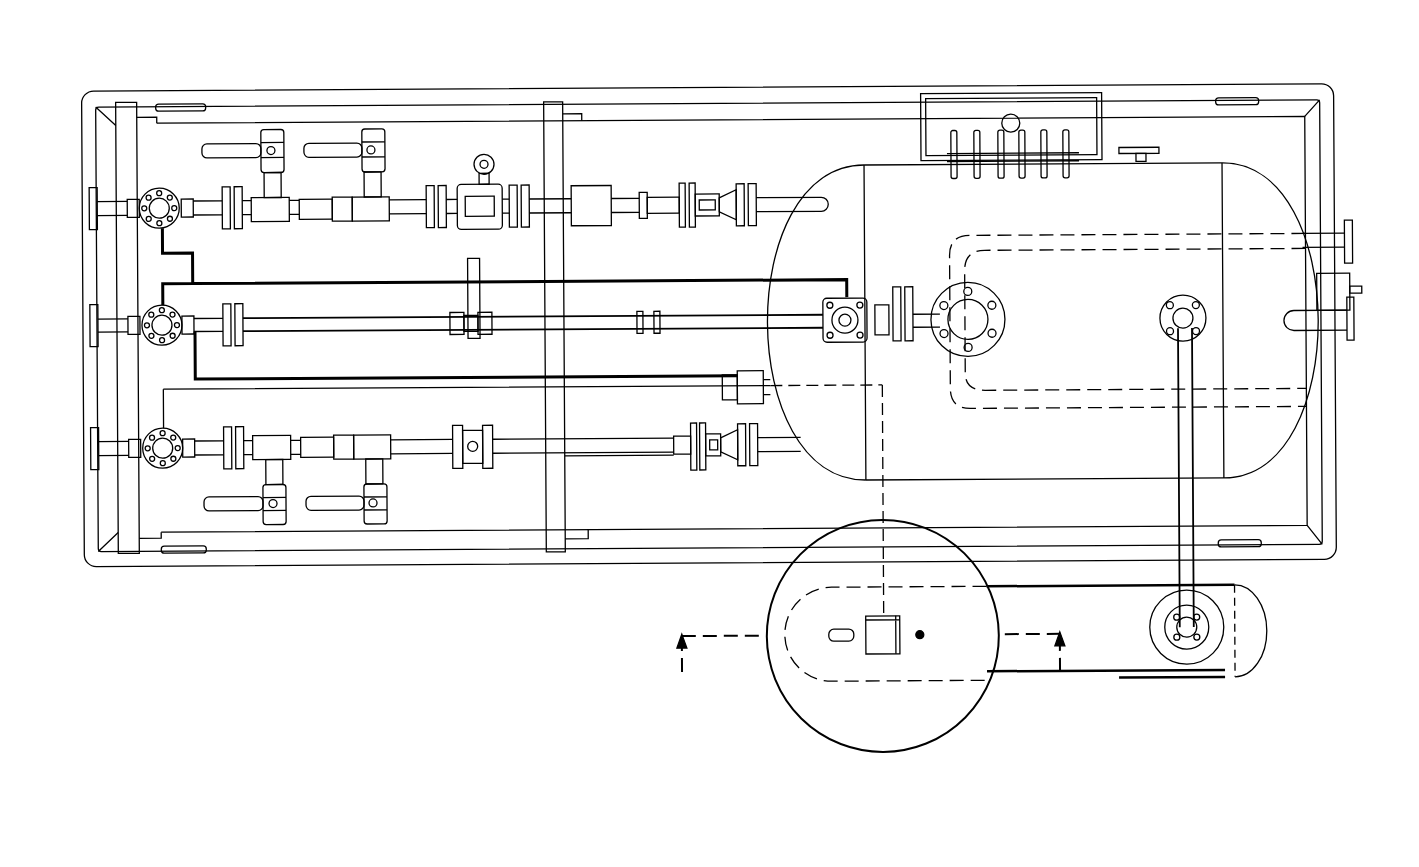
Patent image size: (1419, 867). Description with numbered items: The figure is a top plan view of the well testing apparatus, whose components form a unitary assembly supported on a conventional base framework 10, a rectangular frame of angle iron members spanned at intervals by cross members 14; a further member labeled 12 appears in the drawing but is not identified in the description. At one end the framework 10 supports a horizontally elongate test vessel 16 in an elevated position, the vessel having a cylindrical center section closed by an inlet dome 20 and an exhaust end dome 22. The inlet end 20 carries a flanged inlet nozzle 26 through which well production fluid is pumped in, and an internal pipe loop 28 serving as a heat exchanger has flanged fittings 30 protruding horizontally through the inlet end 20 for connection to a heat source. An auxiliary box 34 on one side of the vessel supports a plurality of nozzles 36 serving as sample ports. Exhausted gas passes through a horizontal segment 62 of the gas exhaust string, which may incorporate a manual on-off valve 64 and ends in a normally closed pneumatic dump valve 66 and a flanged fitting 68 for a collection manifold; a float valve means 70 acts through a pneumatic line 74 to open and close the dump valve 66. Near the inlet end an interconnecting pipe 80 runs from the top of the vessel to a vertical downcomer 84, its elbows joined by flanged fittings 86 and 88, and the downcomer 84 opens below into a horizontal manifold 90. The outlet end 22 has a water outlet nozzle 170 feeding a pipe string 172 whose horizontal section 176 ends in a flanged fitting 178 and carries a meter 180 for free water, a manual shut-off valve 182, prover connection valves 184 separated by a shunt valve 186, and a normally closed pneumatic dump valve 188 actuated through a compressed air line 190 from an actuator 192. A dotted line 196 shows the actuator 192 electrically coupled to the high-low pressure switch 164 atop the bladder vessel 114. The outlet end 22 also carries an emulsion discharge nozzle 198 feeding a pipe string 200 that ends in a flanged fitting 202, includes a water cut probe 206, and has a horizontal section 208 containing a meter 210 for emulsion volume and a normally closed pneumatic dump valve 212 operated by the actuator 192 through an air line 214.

The base framework 10 is at (637, 86).
The frame housing 12 is at (1337, 118).
The cross members 14 is at (553, 127).
The test vessel 16 is at (1176, 158).
The inlet dome 20 is at (1272, 458).
The exhaust end dome 22 is at (818, 180).
The flanged inlet nozzle 26 is at (1356, 320).
The internal pipe loop 28 is at (1240, 392).
The flanged fittings 30 is at (1356, 235).
The auxiliary box 34 is at (930, 140).
The nozzles 36 is at (1085, 135).
The horizontal segment of gas exhaust pipe string 62 is at (322, 330).
The manual on-off valve 64 is at (468, 299).
The dump valve 66 is at (162, 343).
The flanged fitting 68 is at (84, 330).
The float valve means 70 is at (917, 300).
The pneumatic line 74 is at (700, 278).
The interconnecting pipe 80 is at (1195, 508).
The downcomer 84 is at (1258, 650).
The flanged fitting 86 is at (1178, 305).
The flanged fitting 88 is at (1230, 614).
The manifold 90 is at (1118, 680).
The bladder vessel 114 is at (786, 705).
The high-low pressure switch 164 is at (880, 657).
The water outlet nozzle 170 is at (772, 453).
The pipe string 172 is at (413, 456).
The horizontal section of pipe string 176 is at (582, 456).
The flanged fitting 178 is at (84, 446).
The meter 180 is at (475, 458).
The manual shut-off valve 182 is at (680, 470).
The prover connection valves 184 is at (370, 524).
The shunt valve 186 is at (318, 437).
The pneumatic dump valve 188 is at (160, 467).
The compressed air line 190 is at (165, 418).
The actuator 192 is at (737, 378).
The dotted line 196 is at (884, 502).
The emulsion discharge nozzle 198 is at (787, 195).
The pipe string 200 is at (408, 197).
The flanged fitting 202 is at (84, 212).
The water cut probe 206 is at (592, 185).
The horizontal section of pipe string 208 is at (358, 220).
The meter 210 is at (497, 182).
The pneumatic dump valve 212 is at (160, 185).
The air line 214 is at (197, 266).